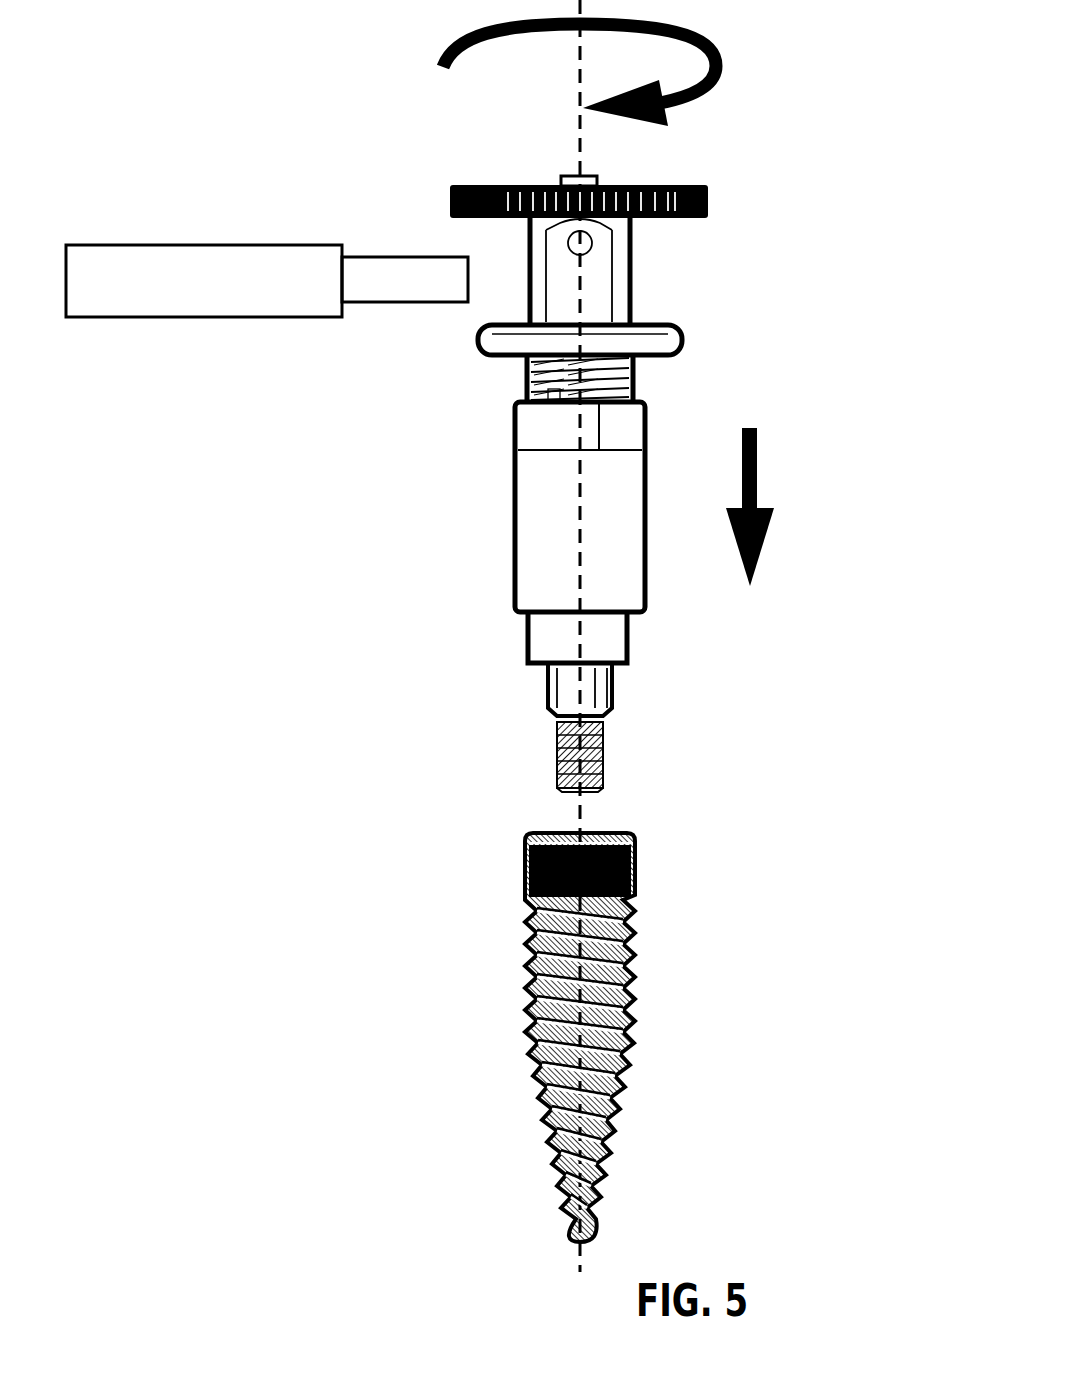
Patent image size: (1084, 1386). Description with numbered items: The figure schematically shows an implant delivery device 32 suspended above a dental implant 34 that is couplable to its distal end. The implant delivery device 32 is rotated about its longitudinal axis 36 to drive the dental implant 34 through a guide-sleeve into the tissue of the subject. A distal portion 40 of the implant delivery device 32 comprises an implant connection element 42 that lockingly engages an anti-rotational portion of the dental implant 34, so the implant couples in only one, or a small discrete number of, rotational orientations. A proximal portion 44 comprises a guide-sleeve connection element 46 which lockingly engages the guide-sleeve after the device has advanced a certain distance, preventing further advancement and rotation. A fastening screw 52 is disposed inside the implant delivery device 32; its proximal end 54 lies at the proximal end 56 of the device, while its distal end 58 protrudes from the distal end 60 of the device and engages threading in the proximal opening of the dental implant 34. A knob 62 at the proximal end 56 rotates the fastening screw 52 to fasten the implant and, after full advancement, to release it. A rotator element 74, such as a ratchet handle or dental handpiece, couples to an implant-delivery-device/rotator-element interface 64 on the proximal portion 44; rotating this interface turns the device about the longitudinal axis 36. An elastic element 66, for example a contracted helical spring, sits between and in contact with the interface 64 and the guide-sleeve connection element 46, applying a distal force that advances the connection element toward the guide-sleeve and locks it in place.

The implant delivery device 32 is at (797, 204).
The dental implant 34 is at (455, 952).
The longitudinal axis 36 is at (578, 528).
The distal portion 40 is at (463, 687).
The implant connection element 42 is at (607, 683).
The proximal portion 44 is at (380, 362).
The guide-sleeve connection element 46 is at (645, 417).
The fastening screw 52 is at (605, 748).
The proximal end of fastening screw 54 is at (585, 178).
The proximal end of implant delivery device 56 is at (400, 205).
The distal end of fastening screw 58 is at (605, 790).
The distal end of implant delivery device 60 is at (553, 703).
The knob 62 is at (667, 220).
The implant-delivery-device/rotator-element interface 64 is at (633, 288).
The elastic element 66 is at (528, 373).
The rotator element 74 is at (101, 317).